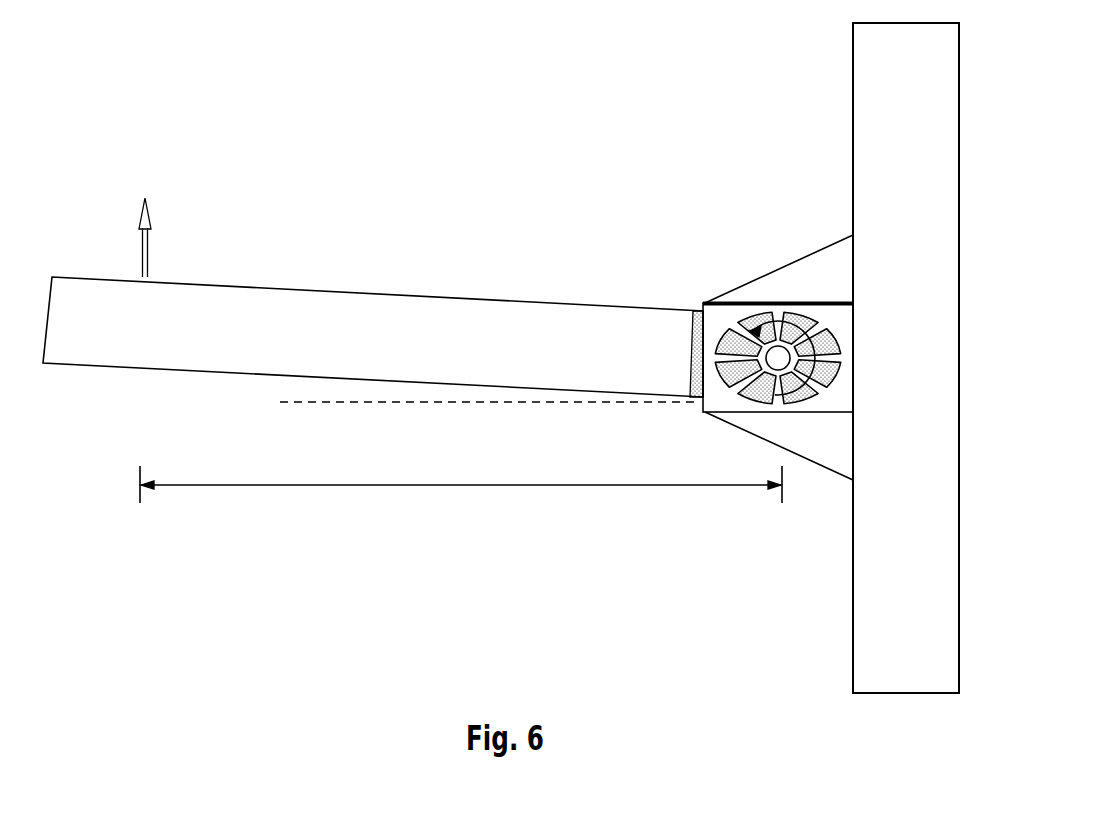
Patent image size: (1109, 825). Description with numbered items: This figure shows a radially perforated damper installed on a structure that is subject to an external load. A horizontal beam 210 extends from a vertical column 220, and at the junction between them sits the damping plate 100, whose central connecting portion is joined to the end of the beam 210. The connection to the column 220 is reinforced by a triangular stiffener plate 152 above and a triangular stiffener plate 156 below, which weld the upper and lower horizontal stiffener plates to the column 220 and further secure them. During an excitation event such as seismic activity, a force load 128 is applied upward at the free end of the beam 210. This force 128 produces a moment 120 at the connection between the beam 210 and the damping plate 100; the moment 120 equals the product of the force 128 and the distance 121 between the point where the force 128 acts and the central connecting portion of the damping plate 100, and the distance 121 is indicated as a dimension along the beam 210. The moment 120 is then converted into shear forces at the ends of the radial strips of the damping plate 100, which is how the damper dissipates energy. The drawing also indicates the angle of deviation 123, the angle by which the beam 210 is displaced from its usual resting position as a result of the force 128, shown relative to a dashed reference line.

The rotation assembly / hub mount 100 is at (707, 303).
The rotary hub 120 is at (768, 313).
The arm length 121 is at (365, 485).
The horizontal reference line 123 is at (347, 380).
The upward deflection arrow 128 is at (148, 227).
The upper brace 152 is at (823, 270).
The lower brace 156 is at (813, 450).
The arm 210 is at (85, 340).
The wall / support column 220 is at (895, 660).